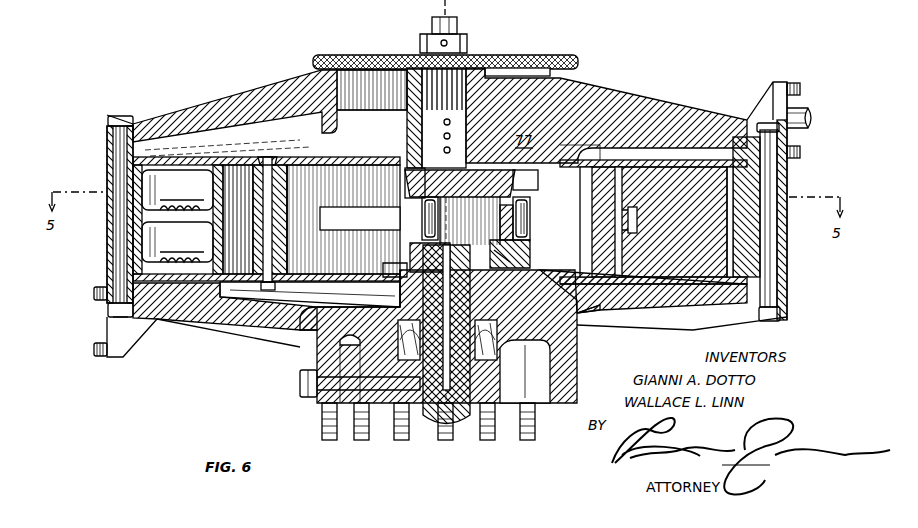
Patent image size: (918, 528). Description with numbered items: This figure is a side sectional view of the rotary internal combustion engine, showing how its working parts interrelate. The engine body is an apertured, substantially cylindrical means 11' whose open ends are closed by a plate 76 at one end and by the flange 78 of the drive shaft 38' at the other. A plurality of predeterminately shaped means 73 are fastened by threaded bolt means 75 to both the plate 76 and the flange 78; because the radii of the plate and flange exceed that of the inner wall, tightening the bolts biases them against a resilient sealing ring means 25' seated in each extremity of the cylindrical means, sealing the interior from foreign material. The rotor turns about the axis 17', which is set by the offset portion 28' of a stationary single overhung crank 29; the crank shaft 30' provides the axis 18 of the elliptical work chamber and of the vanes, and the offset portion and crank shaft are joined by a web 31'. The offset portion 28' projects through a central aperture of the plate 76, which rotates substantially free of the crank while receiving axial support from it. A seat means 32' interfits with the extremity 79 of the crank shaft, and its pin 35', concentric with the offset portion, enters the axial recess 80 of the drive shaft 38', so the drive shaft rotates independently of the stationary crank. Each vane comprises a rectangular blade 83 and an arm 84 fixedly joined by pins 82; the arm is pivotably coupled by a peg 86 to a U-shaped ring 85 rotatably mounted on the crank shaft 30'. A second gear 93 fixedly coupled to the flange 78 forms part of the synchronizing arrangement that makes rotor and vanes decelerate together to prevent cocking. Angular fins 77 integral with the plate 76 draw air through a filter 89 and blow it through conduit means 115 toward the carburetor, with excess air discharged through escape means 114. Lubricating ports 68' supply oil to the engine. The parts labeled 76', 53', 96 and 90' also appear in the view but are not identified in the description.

The cylindrical shaped means 11' is at (102, 216).
The escape means 114 is at (107, 322).
The angular fins 77 is at (343, 133).
The predeterminately shaped means 73 is at (283, 208).
The threaded bolt means 75 is at (270, 166).
The flange of drive shaft 78 is at (337, 268).
The web 31' is at (372, 208).
The spacer 76' is at (401, 183).
The crank shaft 30' is at (398, 266).
The axis 17' is at (458, 17).
The lubricating ports 68' is at (433, 33).
The offset portion 28' is at (445, 51).
The filter 89 is at (533, 58).
The axis 18 is at (480, 185).
The resilient sealing ring means 25' is at (626, 119).
The end ring 53' is at (725, 207).
The conduit means 115 is at (812, 118).
The rectangular blade 83 is at (658, 222).
The pins 82 is at (598, 252).
The key 96 is at (637, 214).
The single overhung crank 29 is at (506, 180).
The plate 76 is at (535, 180).
The ring 85 is at (532, 203).
The arm 84 is at (530, 208).
The peg 86 is at (530, 234).
The seat means 32' is at (430, 258).
The extremity of crank shaft 79 is at (520, 255).
The second gear 93 is at (532, 262).
The pin 35' is at (313, 294).
The drive shaft 38' is at (446, 353).
The axial recess 80 is at (525, 371).
The lower flange 90' is at (682, 334).